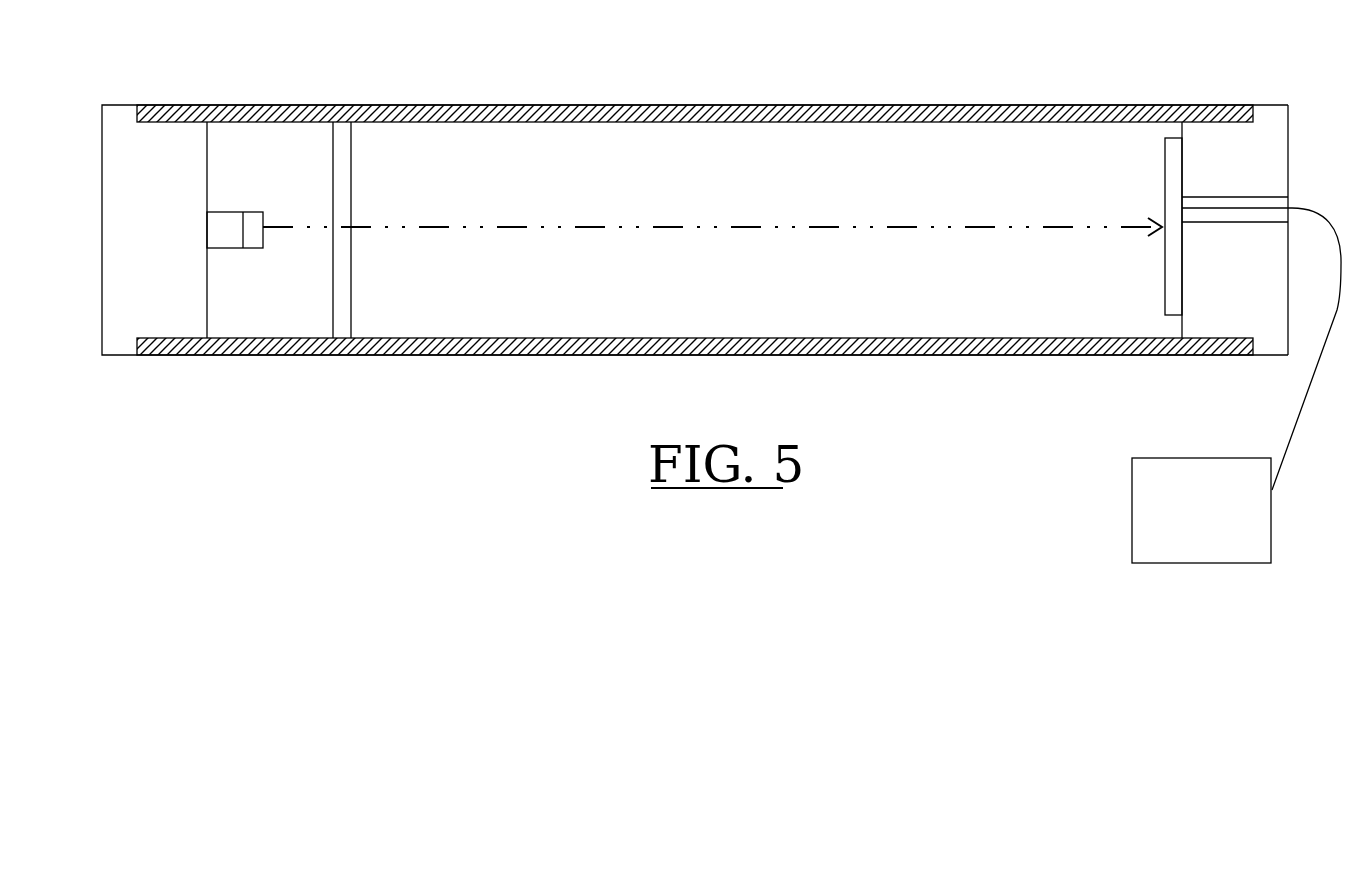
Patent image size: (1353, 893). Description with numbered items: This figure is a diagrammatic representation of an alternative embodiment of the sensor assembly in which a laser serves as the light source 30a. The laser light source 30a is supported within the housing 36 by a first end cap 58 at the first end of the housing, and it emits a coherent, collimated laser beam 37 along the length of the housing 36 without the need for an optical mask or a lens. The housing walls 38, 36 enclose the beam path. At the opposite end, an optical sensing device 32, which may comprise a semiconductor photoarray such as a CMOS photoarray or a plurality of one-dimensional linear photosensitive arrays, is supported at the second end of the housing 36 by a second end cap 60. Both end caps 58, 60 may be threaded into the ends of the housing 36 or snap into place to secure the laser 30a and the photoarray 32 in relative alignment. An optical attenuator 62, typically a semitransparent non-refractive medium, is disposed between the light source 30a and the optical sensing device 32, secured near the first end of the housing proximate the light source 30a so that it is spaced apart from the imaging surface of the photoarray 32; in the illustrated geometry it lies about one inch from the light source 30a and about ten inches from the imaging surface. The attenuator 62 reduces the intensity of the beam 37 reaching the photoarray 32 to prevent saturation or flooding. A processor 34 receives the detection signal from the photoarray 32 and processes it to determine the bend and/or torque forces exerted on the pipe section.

The light source 30a is at (243, 248).
The optical sensing device 32 is at (1164, 172).
The processor 34 is at (1132, 528).
The housing 36 is at (422, 355).
The light beam 37 is at (723, 225).
The top housing wall 38 is at (295, 104).
The first end cap 58 is at (102, 355).
The second end cap 60 is at (1270, 355).
The optical attenuator 62 is at (352, 176).